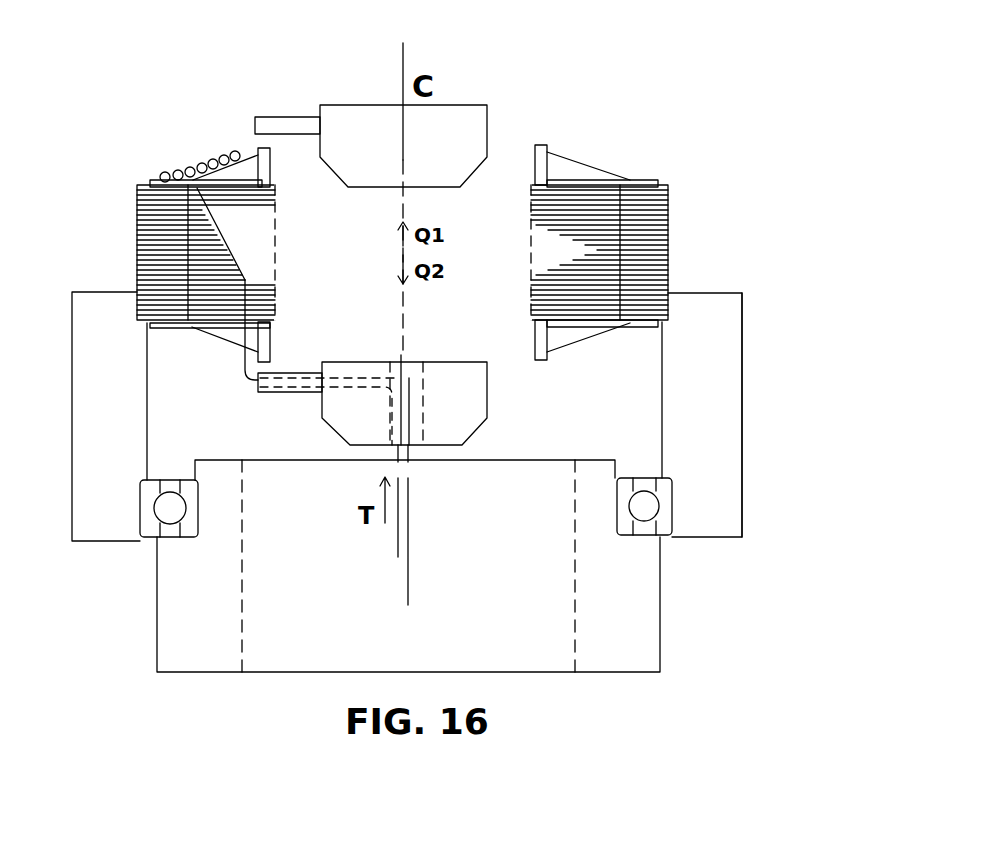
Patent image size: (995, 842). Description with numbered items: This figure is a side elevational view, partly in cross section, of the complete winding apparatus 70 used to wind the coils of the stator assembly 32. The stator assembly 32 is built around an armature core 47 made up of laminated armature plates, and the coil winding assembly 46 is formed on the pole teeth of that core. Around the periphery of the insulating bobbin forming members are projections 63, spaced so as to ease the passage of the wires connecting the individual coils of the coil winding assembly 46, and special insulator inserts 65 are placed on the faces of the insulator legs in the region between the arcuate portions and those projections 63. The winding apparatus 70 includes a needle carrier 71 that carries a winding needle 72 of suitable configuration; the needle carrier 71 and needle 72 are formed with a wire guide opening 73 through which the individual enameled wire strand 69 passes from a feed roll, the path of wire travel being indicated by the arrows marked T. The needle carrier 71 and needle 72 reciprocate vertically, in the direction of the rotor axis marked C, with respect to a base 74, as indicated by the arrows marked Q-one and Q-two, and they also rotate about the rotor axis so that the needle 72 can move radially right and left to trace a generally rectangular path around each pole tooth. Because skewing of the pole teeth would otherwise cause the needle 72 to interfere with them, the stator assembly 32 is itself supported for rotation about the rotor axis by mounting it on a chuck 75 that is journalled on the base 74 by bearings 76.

The stator assembly 32 is at (124, 249).
The coil winding assembly 46 is at (223, 138).
The armature core 47 is at (663, 208).
The projections 63 is at (633, 180).
The special insulator inserts 65 is at (567, 168).
The enameled wire strand 69 is at (163, 173).
The winding apparatus 70 is at (731, 289).
The needle carrier 71 is at (458, 113).
The winding needle 72 is at (300, 116).
The wire guide opening 73 is at (423, 405).
The base 74 is at (645, 612).
The chuck 75 is at (740, 386).
The bearings 76 is at (672, 506).